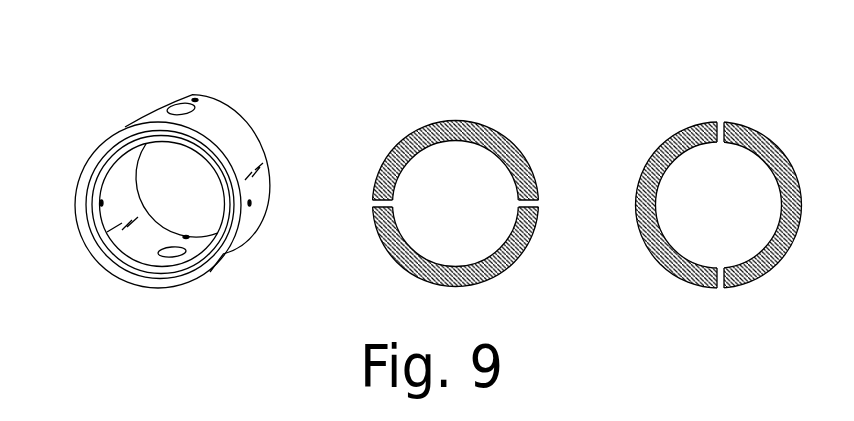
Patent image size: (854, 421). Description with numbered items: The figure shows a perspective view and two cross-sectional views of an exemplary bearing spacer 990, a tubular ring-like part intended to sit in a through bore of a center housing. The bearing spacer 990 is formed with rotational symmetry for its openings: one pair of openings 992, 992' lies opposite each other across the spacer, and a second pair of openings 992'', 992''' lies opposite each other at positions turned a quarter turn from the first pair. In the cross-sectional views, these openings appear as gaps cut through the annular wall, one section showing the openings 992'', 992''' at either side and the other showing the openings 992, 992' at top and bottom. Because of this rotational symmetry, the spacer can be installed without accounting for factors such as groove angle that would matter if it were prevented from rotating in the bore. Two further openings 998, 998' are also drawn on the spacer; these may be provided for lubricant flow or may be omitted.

The bearing spacer 990 is at (125, 38).
The opening 992 is at (483, 95).
The opening 992' is at (455, 186).
The opening 992'' is at (277, 188).
The opening 992''' is at (429, 177).
The opening 998 is at (147, 98).
The opening 998' is at (109, 245).